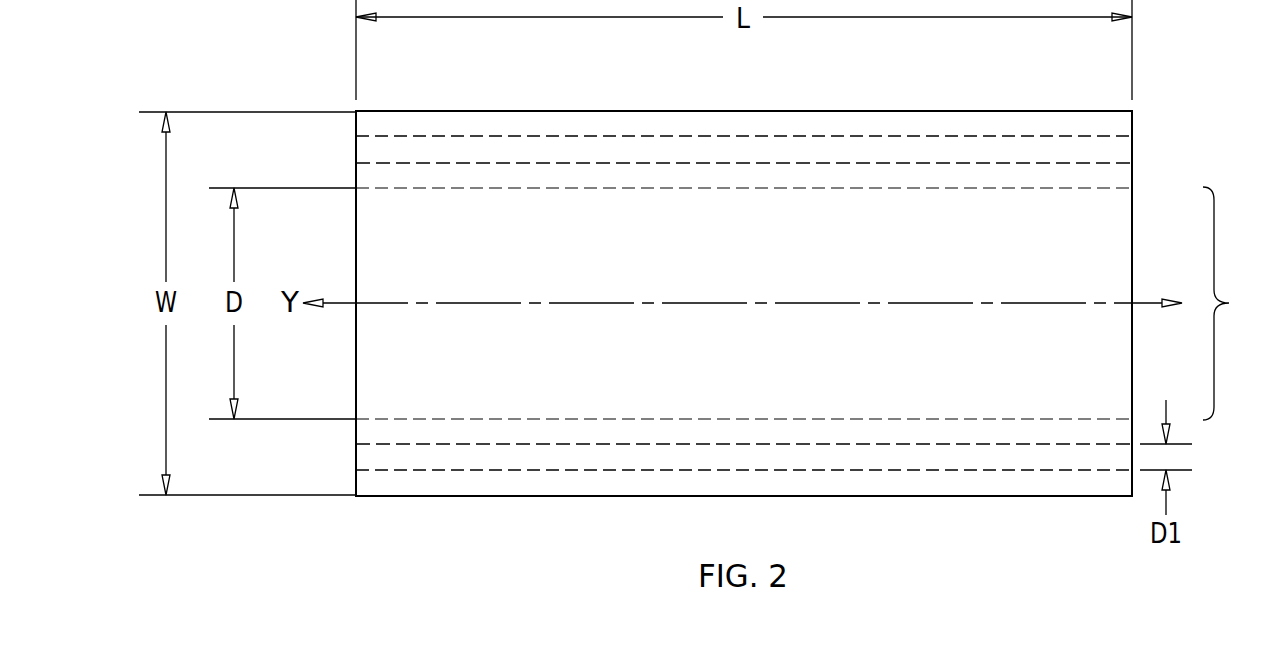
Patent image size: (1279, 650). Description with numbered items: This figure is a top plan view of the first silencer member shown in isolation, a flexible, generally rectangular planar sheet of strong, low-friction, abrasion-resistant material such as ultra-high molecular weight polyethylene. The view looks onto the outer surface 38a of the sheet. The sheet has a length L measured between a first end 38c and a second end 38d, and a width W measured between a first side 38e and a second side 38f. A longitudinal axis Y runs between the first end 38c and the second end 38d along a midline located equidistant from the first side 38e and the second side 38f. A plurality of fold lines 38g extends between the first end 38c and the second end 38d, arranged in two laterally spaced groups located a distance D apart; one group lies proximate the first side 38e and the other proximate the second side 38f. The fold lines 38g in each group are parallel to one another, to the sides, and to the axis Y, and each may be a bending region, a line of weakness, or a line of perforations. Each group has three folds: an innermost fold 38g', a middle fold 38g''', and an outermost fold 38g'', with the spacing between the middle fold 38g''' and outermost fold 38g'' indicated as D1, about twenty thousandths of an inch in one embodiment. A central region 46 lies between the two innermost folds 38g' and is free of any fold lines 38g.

The outer surface 38a is at (503, 378).
The first end 38c is at (335, 377).
The second end 38d is at (1132, 152).
The first side 38e is at (536, 91).
The second side 38f is at (536, 517).
The fold lines 38g is at (744, 301).
The innermost fold 38g' is at (744, 303).
The outermost fold 38g'' is at (744, 304).
The middle fold 38g''' is at (744, 304).
The central region 46 is at (1234, 303).